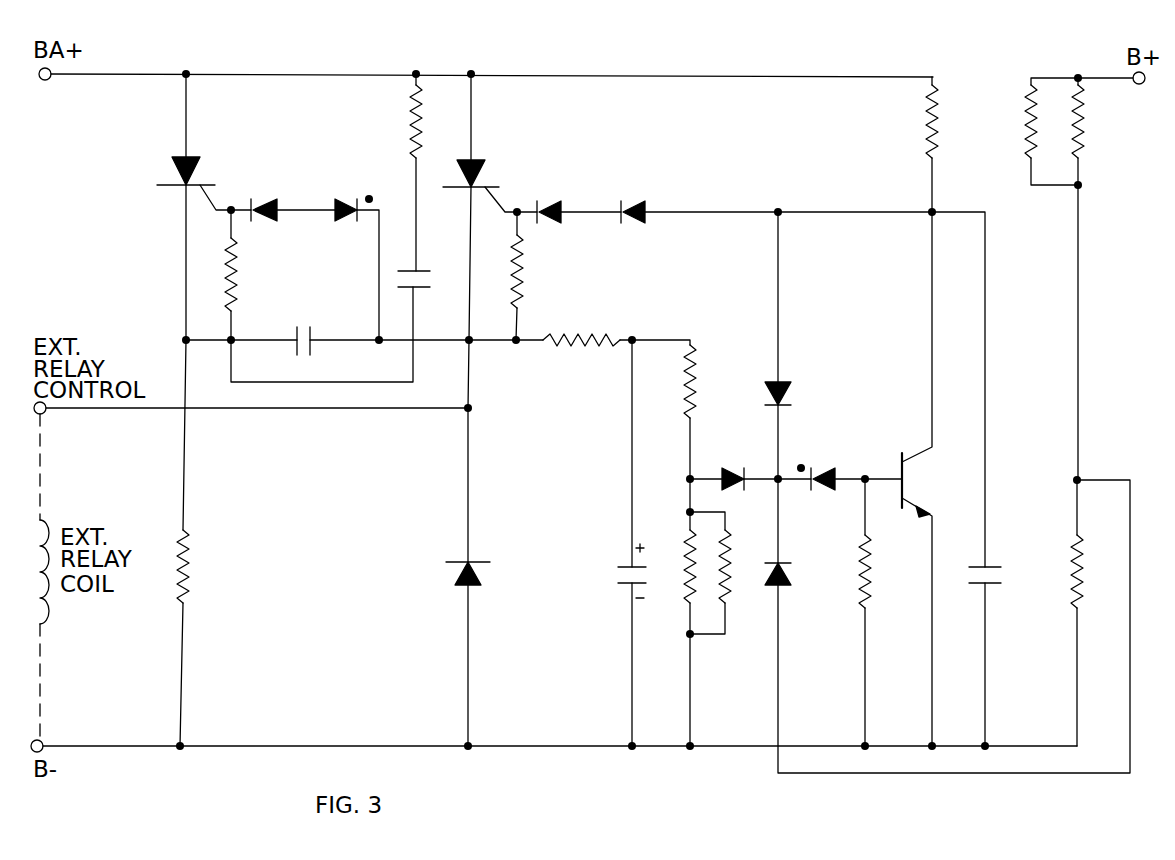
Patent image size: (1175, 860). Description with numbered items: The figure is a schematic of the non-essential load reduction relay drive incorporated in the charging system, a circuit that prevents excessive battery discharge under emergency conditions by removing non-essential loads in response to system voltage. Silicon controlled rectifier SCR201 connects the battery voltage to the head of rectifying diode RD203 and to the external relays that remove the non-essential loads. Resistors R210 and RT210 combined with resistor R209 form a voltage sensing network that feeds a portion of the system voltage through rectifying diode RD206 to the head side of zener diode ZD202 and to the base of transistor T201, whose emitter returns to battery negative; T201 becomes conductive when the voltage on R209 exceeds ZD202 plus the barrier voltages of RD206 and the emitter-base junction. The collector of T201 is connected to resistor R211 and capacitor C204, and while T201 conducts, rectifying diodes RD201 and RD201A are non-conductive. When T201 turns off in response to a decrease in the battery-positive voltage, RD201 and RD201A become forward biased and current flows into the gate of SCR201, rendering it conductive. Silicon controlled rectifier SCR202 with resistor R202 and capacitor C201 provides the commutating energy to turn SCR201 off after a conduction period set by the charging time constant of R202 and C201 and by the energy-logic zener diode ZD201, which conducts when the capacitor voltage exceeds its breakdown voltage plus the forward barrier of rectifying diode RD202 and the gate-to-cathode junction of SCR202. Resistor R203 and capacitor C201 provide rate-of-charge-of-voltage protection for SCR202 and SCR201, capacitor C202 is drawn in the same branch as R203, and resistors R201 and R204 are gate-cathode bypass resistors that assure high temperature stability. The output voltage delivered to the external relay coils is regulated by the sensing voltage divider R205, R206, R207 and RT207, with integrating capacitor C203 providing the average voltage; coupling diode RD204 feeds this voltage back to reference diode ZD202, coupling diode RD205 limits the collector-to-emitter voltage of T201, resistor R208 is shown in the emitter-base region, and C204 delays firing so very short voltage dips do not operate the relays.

The silicon controlled rectifier SCR202 is at (125, 171).
The silicon controlled rectifier SCR201 is at (514, 159).
The rectifying diode RD202 is at (286, 225).
The zener diode ZD201 is at (348, 195).
The resistor R201 is at (263, 274).
The resistor R203 is at (371, 121).
The capacitor C202 is at (430, 302).
The capacitor C201 is at (318, 326).
The resistor R202 is at (214, 566).
The rectifying diode RD203 is at (433, 560).
The resistor R204 is at (550, 271).
The rectifying diode RD201 is at (578, 197).
The rectifying diode RD201A is at (671, 229).
The resistor R205 is at (581, 326).
The resistor R206 is at (722, 379).
The coupling diode RD204 is at (732, 466).
The coupling diode RD205 is at (814, 381).
The zener diode ZD202 is at (830, 465).
The transistor T201 is at (935, 485).
The integrating capacitor C203 is at (600, 567).
The resistor R207 is at (669, 596).
The thermistor resistor RT207 is at (745, 596).
The rectifying diode RD206 is at (798, 600).
The resistor R208 is at (890, 571).
The capacitor C204 is at (1008, 590).
The resistor R209 is at (1042, 563).
The resistor R211 is at (893, 121).
The thermistor resistor RT210 is at (1006, 121).
The resistor R210 is at (1111, 121).